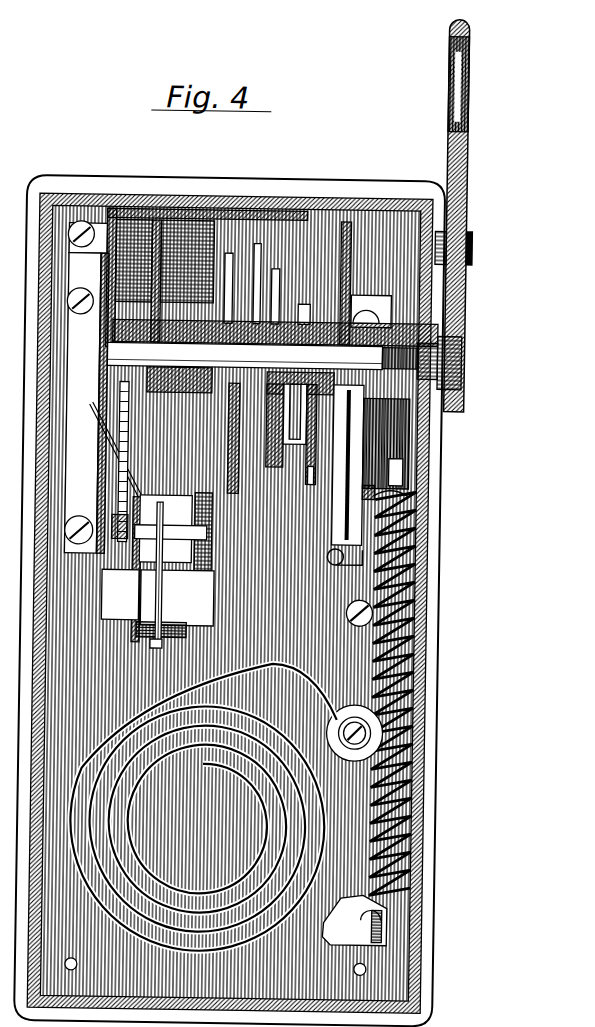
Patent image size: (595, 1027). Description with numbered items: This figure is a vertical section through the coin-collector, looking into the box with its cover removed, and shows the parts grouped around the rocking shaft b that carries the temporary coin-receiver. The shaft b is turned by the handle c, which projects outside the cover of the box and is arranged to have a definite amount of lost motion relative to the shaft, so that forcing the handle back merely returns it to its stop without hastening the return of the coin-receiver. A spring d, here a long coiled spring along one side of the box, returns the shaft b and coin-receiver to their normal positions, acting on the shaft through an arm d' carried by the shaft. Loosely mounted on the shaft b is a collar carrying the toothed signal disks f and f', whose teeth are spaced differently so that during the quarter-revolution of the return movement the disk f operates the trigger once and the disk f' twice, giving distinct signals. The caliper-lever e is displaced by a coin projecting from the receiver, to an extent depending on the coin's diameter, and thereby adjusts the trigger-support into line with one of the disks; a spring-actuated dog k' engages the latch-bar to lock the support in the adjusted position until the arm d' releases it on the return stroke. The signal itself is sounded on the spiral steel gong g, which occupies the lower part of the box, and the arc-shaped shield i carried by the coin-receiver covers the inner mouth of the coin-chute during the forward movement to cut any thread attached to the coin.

The arc-shaped shield i is at (138, 205).
The handle c is at (468, 160).
The rocking shaft b is at (284, 360).
The caliper-lever e is at (112, 440).
The toothed disk f is at (274, 454).
The toothed disk f' is at (308, 454).
The arm d' is at (413, 466).
The spring-actuated dog k' is at (427, 501).
The spring d is at (428, 695).
The spiral steel gong g is at (266, 662).